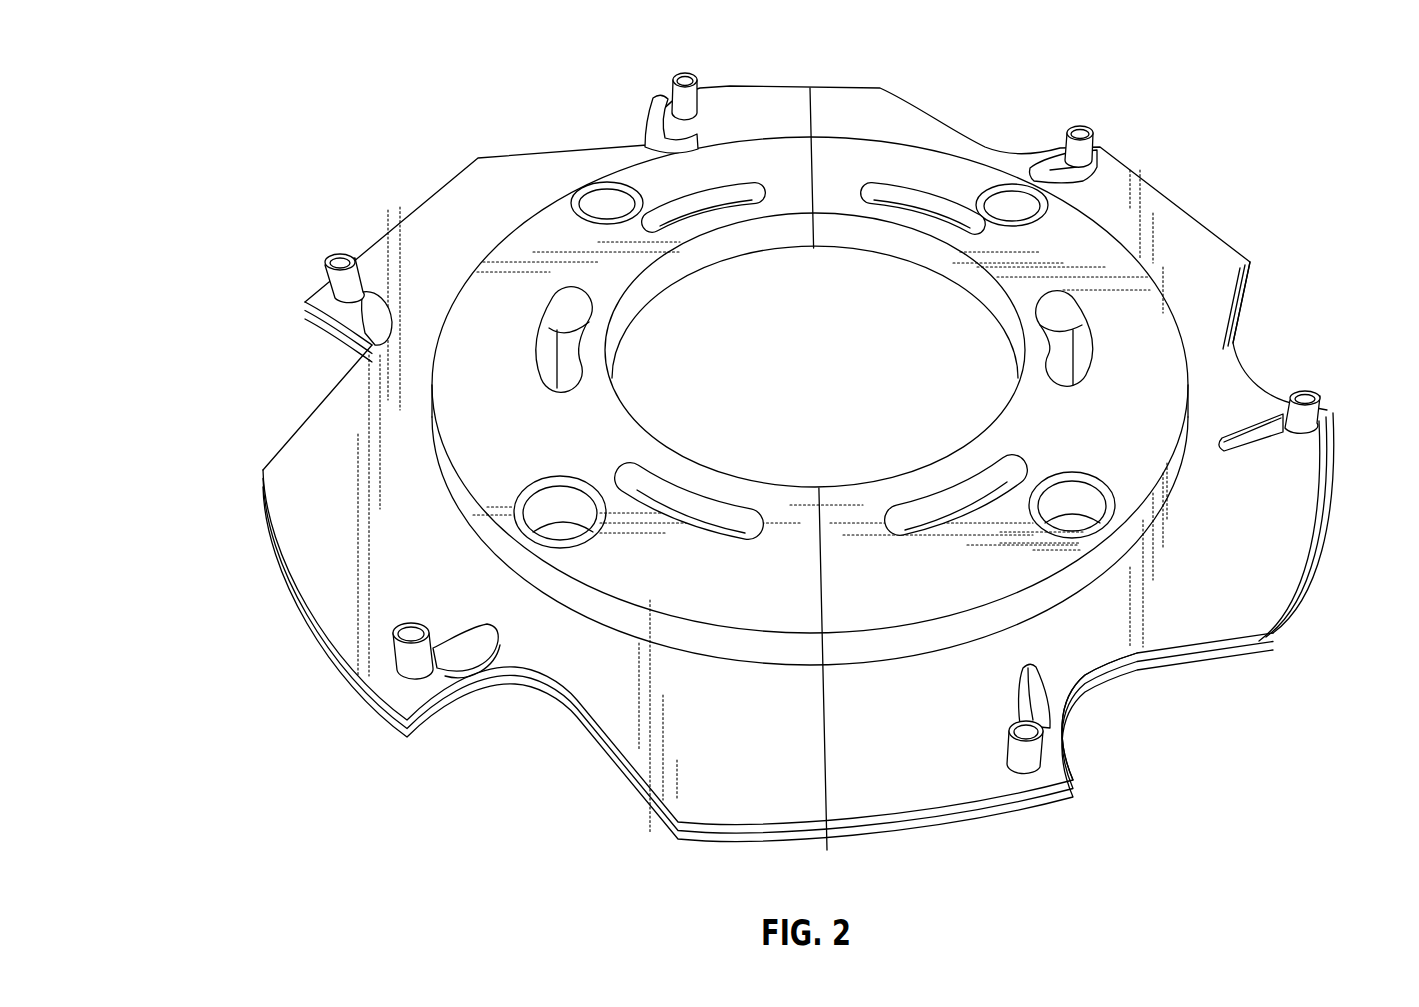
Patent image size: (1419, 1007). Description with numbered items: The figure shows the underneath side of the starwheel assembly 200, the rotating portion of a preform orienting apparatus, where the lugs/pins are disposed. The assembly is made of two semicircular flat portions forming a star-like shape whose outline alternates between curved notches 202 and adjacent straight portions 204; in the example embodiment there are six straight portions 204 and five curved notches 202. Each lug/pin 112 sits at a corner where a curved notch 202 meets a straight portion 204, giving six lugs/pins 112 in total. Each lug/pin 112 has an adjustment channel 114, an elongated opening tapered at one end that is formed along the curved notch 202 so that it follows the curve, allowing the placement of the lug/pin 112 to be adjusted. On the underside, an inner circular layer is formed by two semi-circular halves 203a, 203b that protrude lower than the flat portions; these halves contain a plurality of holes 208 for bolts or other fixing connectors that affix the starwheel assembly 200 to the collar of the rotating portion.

The starwheel assembly 200 is at (753, 445).
The curved notch 202 is at (1080, 709).
The semi-circular portion 203a is at (1109, 433).
The semi-circular portion 203b is at (567, 433).
The straight portion 204 is at (285, 580).
The hole 208 is at (1062, 313).
The lug/pin 112 is at (412, 680).
The adjustment channel 114 is at (512, 652).